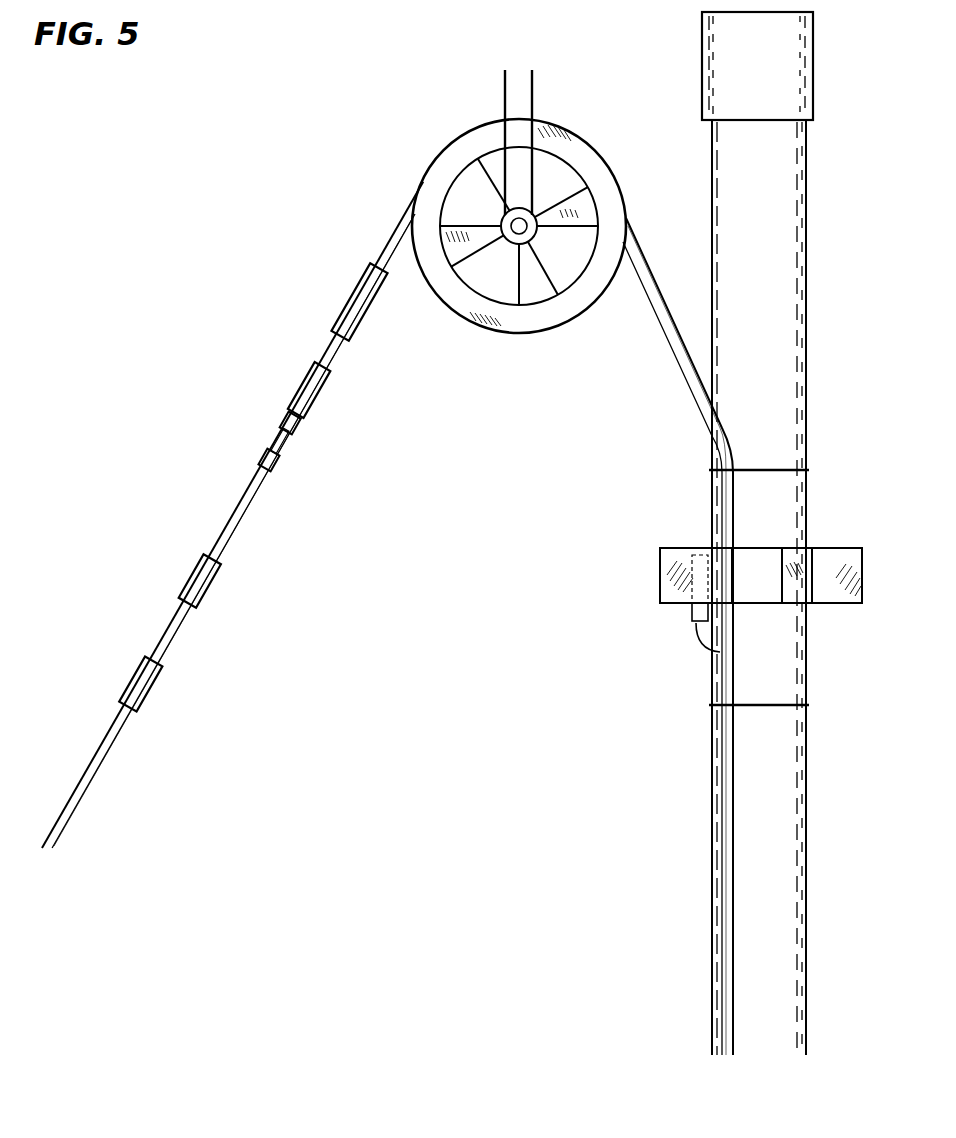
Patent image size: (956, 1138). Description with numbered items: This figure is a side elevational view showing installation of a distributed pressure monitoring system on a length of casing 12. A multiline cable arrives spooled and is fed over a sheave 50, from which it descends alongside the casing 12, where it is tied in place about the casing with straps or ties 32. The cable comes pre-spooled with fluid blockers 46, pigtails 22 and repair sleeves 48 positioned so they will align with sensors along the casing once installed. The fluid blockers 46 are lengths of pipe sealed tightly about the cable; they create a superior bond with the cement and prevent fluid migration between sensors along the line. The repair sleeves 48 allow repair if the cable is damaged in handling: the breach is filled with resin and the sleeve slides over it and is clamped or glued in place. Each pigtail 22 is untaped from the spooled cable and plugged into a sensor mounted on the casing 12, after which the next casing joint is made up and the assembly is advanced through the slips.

The casing 12 is at (770, 190).
The pigtail 22 is at (280, 442).
The straps or ties 32 is at (762, 470).
The fluid blocker 46 is at (198, 578).
The repair sleeve 48 is at (348, 306).
The sheave 50 is at (452, 160).